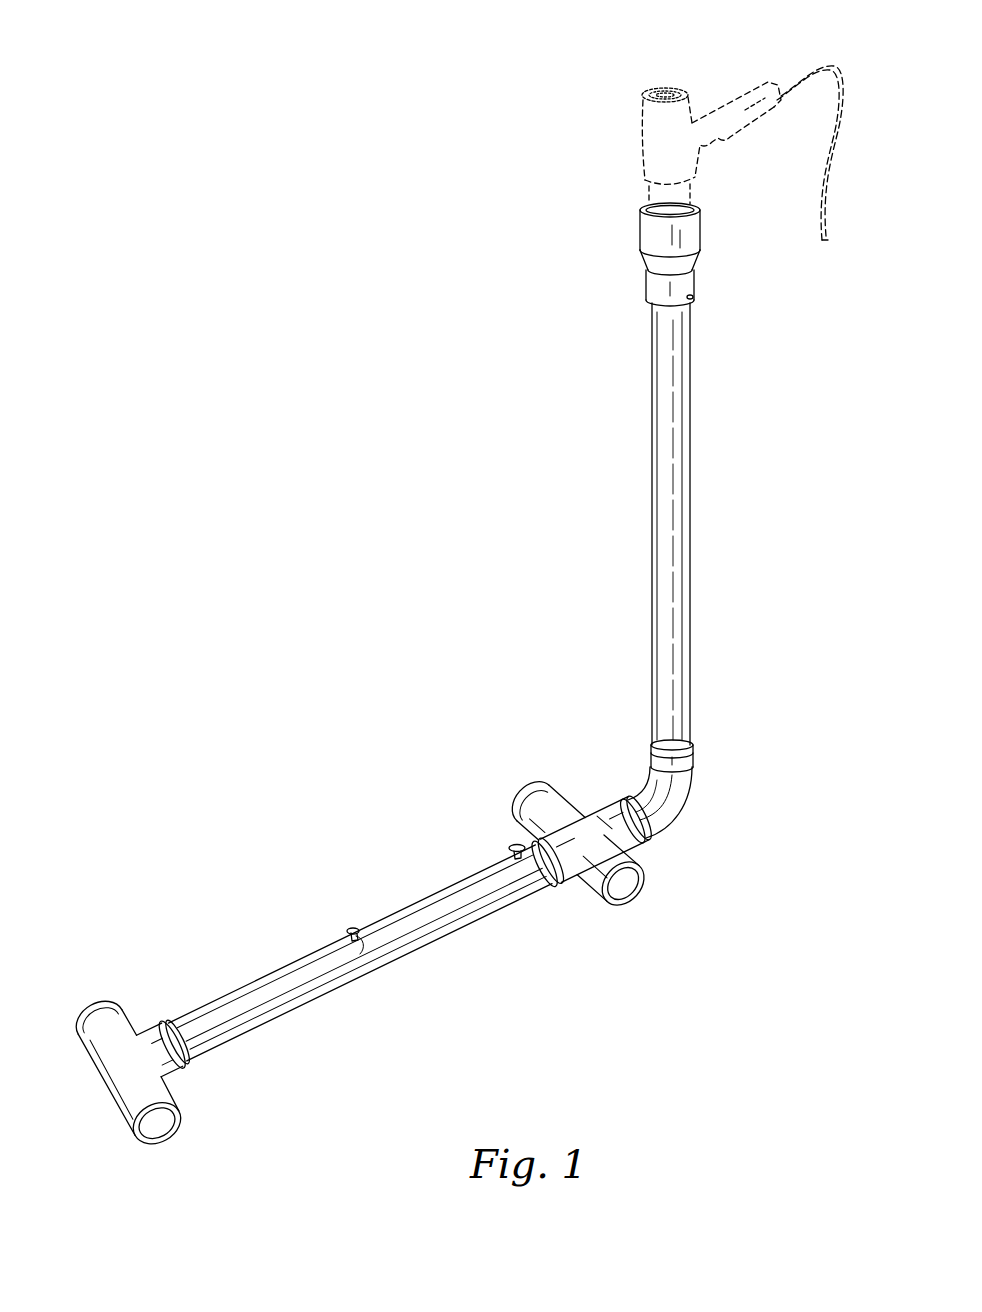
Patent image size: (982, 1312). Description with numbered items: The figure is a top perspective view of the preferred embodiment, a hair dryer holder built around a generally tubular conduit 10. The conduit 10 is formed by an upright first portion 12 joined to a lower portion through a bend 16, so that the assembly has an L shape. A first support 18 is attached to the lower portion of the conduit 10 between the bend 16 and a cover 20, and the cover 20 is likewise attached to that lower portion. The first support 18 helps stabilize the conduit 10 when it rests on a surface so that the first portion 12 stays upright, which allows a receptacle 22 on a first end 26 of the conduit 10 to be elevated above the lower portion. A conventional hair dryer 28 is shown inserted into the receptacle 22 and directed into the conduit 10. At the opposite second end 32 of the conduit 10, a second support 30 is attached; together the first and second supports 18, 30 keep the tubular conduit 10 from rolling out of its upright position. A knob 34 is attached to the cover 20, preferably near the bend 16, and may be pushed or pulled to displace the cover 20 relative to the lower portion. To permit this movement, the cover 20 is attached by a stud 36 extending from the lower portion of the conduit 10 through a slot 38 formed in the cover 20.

The conduit 10 is at (405, 593).
The first portion 12 is at (652, 478).
The bend 16 is at (685, 805).
The first support 18 is at (574, 909).
The cover 20 is at (447, 905).
The receptacle 22 is at (700, 240).
The first end 26 is at (620, 187).
The conventional hair dryer 28 is at (738, 97).
The second support 30 is at (96, 1114).
The second end 32 is at (172, 993).
The knob 34 is at (517, 845).
The stud 36 is at (360, 930).
The slot 38 is at (353, 940).